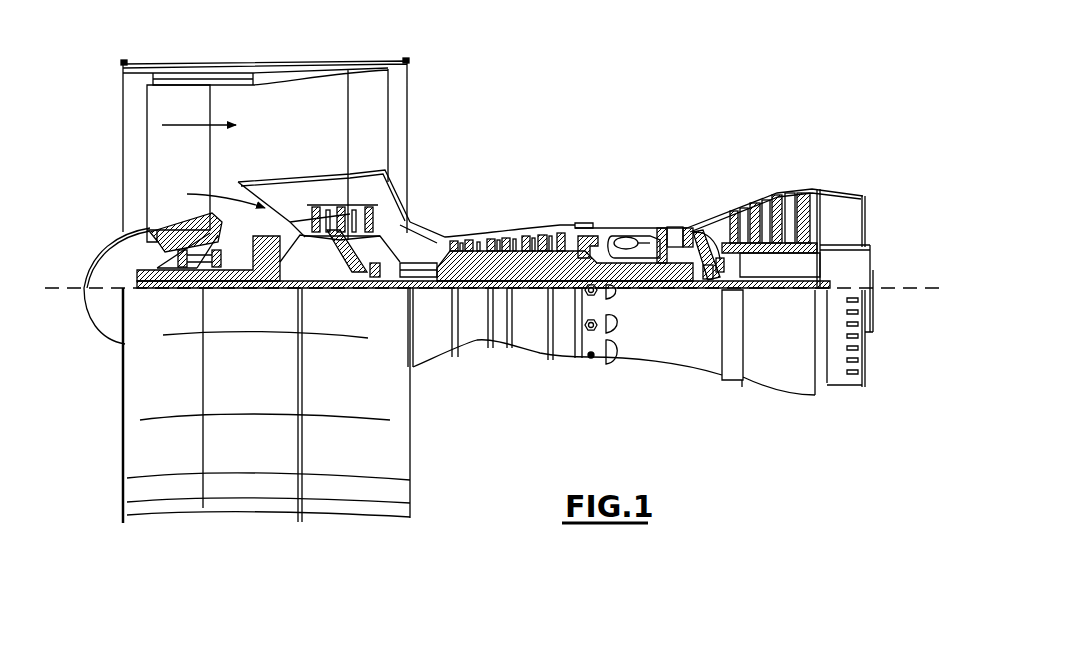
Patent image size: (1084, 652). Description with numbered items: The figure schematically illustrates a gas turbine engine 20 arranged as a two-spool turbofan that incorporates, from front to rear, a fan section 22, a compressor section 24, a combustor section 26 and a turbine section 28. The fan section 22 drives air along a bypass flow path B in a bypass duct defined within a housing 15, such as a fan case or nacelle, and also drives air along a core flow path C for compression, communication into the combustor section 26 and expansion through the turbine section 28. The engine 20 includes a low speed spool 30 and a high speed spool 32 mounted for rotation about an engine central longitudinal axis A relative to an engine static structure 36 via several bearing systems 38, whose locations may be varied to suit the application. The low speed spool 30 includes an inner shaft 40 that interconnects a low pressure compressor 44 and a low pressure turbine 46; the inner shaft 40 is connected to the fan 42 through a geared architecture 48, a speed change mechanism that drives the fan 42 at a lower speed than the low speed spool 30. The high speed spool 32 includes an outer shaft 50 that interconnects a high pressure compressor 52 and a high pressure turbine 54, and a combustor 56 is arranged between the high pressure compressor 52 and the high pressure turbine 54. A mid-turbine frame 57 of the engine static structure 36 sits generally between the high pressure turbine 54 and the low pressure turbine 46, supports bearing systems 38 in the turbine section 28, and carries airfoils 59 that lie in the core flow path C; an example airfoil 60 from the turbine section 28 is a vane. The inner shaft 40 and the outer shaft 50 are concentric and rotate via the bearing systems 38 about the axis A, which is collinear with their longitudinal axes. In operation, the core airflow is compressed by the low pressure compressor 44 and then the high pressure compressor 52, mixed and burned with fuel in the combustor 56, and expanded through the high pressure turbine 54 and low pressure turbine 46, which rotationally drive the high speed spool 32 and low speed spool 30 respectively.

The housing 15 is at (268, 72).
The gas turbine engine 20 is at (629, 107).
The fan section 22 is at (214, 60).
The compressor section 24 is at (447, 217).
The combustor section 26 is at (622, 207).
The turbine section 28 is at (749, 168).
The low speed spool 30 is at (532, 295).
The high speed spool 32 is at (567, 228).
The engine static structure 36 is at (563, 360).
The bearing systems 38 is at (377, 274).
The inner shaft 40 is at (424, 345).
The fan 42 is at (190, 168).
The low pressure compressor 44 is at (287, 246).
The low pressure turbine 46 is at (774, 190).
The geared architecture 48 is at (270, 274).
The outer shaft 50 is at (630, 289).
The high pressure compressor 52 is at (515, 236).
The high pressure turbine 54 is at (675, 224).
The combustor 56 is at (624, 242).
The mid-turbine frame 57 is at (709, 217).
The airfoils 59 is at (713, 245).
The airfoil 60 is at (724, 245).
The engine central longitudinal axis A is at (937, 288).
The bypass flow path B is at (191, 125).
The core flow path C is at (219, 194).